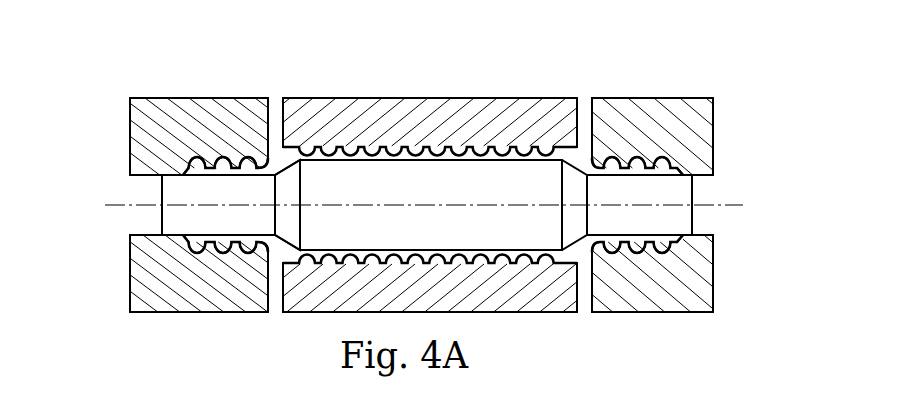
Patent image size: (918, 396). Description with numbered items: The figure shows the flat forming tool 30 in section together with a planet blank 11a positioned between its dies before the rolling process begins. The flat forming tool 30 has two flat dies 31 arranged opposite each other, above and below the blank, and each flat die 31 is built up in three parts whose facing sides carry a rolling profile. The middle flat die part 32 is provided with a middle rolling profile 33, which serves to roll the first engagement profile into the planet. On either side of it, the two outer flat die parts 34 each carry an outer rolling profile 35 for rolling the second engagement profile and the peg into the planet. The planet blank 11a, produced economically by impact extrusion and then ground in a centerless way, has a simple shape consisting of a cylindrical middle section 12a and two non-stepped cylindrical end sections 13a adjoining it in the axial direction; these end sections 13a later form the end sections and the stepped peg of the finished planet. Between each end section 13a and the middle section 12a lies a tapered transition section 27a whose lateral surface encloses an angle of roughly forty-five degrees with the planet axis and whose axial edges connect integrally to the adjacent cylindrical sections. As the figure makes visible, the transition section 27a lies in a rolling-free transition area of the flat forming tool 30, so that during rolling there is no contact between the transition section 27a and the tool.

The flat forming tool 30 is at (112, 123).
The flat die 31 is at (432, 97).
The middle flat die part 32 is at (520, 110).
The middle rolling profile 33 is at (332, 142).
The outer flat die part 34 is at (650, 113).
The non-stepped cylindrical end section 13a is at (200, 165).
The outer rolling profile 35 is at (222, 193).
The tapered transition section 27a is at (287, 182).
The cylindrical middle section 12a is at (407, 187).
The planet blank 11a is at (677, 214).